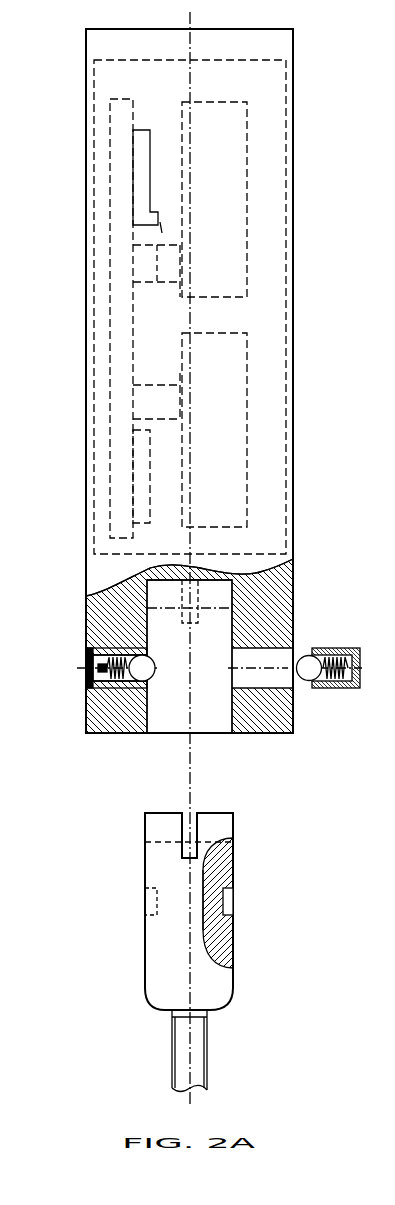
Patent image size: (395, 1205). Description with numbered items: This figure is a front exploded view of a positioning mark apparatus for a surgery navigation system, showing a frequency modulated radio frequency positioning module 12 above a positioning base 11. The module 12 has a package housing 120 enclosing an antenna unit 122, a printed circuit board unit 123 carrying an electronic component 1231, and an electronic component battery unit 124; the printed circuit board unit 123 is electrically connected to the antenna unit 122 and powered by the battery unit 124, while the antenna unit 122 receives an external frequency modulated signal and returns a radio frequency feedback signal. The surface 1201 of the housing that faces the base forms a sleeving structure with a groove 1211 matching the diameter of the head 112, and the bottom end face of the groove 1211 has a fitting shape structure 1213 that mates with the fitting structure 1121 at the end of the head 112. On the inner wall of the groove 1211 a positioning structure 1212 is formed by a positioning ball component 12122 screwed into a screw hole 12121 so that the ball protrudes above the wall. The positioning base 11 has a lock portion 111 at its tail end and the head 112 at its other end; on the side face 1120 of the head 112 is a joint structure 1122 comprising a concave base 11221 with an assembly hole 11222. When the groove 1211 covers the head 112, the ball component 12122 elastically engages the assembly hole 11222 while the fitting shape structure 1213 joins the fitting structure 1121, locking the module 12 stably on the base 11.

The frequency modulated radio frequency positioning module 12 is at (77, 82).
The package housing 120 is at (86, 197).
The antenna unit 122 is at (230, 200).
The printed circuit board unit 123 is at (138, 109).
The electronic component 1231 is at (157, 283).
The electronic component battery unit 124 is at (215, 431).
The fitting shape structure 1213 is at (182, 609).
The positioning structure 1212 is at (156, 681).
The screw hole 12121 is at (85, 682).
The positioning ball component 12122 is at (322, 690).
The groove 1211 is at (163, 733).
The surface 1201 is at (255, 733).
The fitting structure 1121 is at (185, 807).
The positioning base 11 is at (63, 882).
The joint structure 1122 is at (128, 883).
The assembly hole 11222 is at (145, 900).
The concave base 11221 is at (233, 930).
The head 112 is at (158, 965).
The side face 1120 is at (232, 952).
The lock portion 111 is at (172, 1050).